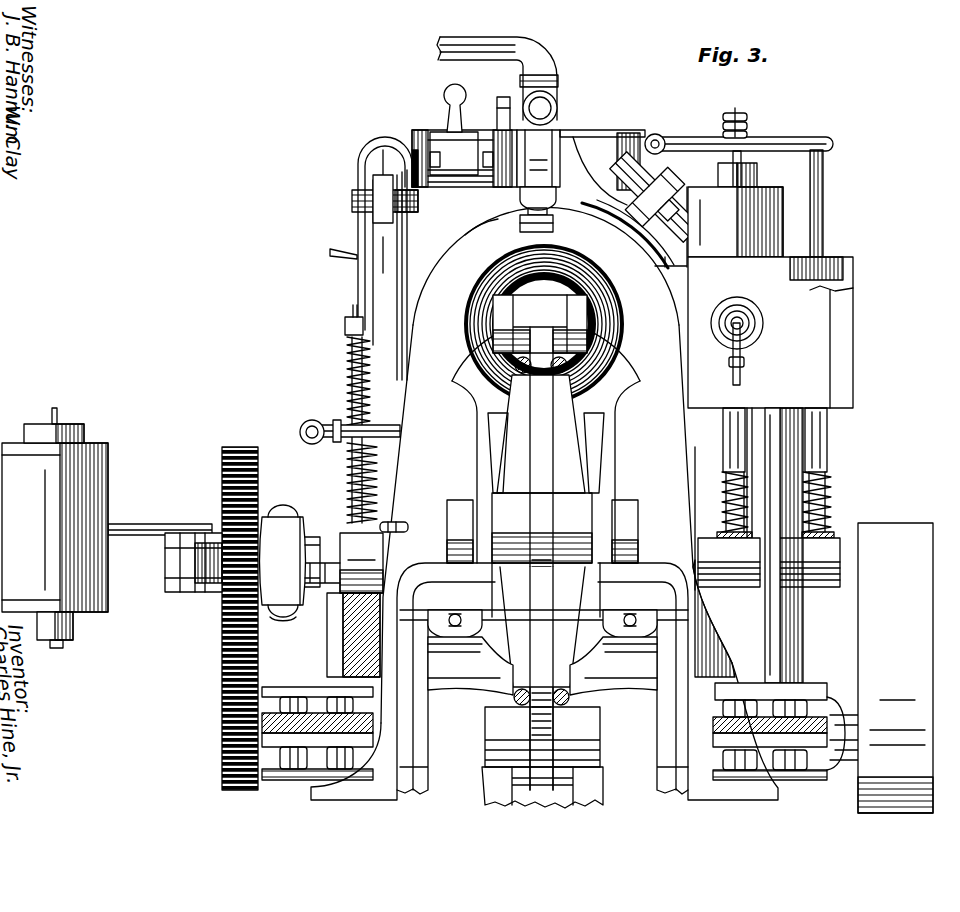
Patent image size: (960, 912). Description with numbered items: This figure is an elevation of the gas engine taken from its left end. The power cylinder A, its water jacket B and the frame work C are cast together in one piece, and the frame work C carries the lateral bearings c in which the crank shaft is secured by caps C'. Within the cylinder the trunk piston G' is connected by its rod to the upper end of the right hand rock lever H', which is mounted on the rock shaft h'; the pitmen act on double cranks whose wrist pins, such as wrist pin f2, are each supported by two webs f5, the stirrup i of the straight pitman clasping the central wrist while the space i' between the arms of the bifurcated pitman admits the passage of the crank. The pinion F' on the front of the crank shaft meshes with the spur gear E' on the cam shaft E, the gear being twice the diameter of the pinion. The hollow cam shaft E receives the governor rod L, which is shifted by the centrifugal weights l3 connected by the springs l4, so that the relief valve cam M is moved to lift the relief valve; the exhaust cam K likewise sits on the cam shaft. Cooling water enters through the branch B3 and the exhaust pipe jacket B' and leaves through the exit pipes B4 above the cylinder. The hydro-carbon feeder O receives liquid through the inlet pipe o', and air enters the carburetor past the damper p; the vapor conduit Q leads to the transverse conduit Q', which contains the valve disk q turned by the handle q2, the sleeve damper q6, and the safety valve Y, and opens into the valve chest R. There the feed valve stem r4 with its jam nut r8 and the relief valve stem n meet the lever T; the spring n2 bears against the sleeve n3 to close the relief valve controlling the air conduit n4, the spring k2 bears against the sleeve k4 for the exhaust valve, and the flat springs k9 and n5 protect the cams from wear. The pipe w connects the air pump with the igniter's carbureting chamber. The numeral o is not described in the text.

The power cylinder A is at (634, 382).
The water jacket B is at (481, 227).
The exhaust pipe jacket B' is at (804, 545).
The water supply pipe branch B3 is at (351, 431).
The exit pipe B4 is at (498, 127).
The frame work C is at (544, 623).
The cap C' is at (540, 794).
The cam shaft E is at (344, 605).
The spur gear E' is at (480, 618).
The pinion F' is at (560, 668).
The trunk piston G' is at (544, 324).
The rock lever H' is at (546, 542).
The rock shaft h' is at (542, 555).
The exhaust cam K is at (729, 562).
The governor rod L is at (158, 564).
The relief valve cam M is at (809, 562).
The feeder O is at (55, 524).
The vapor conduit Q is at (385, 258).
The transverse conduit Q' is at (644, 203).
The valve chest R is at (735, 227).
The lever T is at (739, 132).
The safety valve Y is at (602, 167).
The lateral bearing c is at (560, 717).
The wrist pin f2 is at (542, 652).
The web f5 is at (543, 734).
The stirrup i is at (737, 343).
The space i' is at (542, 788).
The spiral spring k2 is at (747, 502).
The sleeve k4 is at (743, 473).
The flat spring k9 is at (720, 533).
The centrifugal weight l3 is at (290, 561).
The spring l4 is at (299, 514).
The valve stem n is at (825, 203).
The spiral spring n2 is at (836, 490).
The sleeve n3 is at (833, 440).
The air conduit n4 is at (786, 332).
The flat spring n5 is at (833, 534).
The motor terminal o is at (66, 652).
The inlet pipe o' is at (264, 516).
The damper p is at (330, 251).
The valve disk q is at (464, 158).
The handle q2 is at (496, 109).
The sleeve damper q6 is at (454, 129).
The valve stem r4 is at (742, 160).
The jam nut r8 is at (750, 122).
The pipe w is at (350, 380).